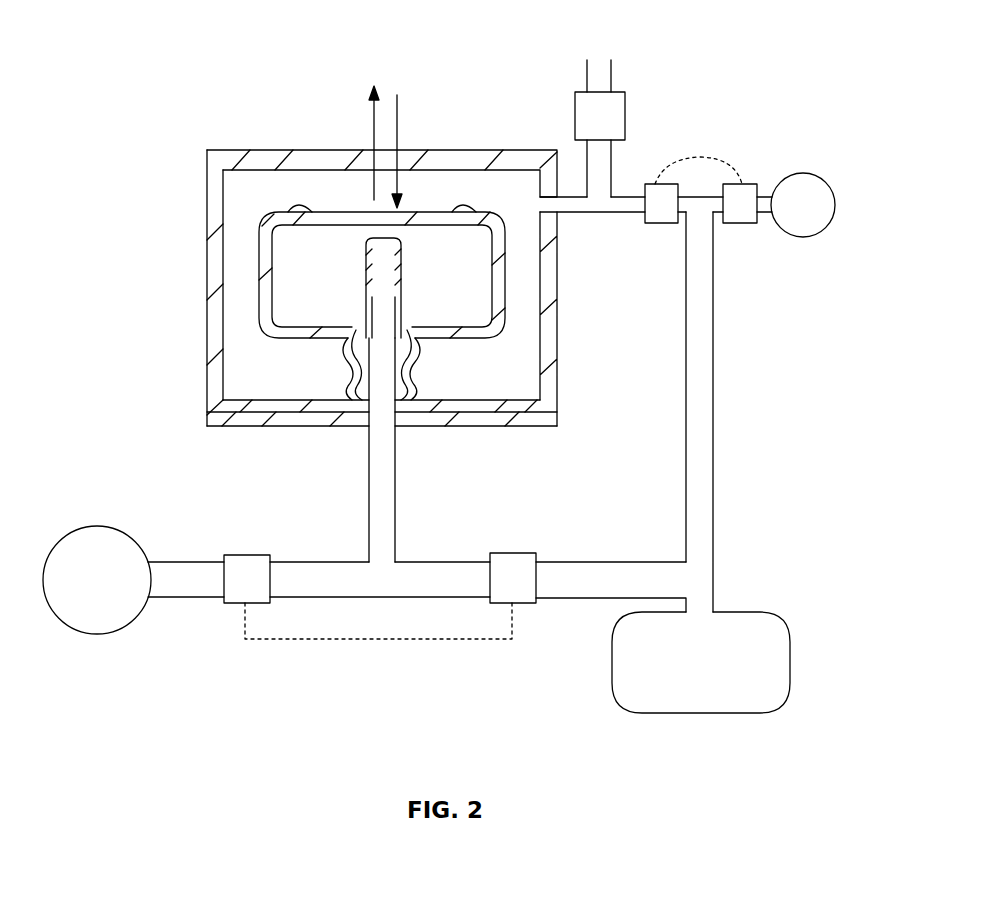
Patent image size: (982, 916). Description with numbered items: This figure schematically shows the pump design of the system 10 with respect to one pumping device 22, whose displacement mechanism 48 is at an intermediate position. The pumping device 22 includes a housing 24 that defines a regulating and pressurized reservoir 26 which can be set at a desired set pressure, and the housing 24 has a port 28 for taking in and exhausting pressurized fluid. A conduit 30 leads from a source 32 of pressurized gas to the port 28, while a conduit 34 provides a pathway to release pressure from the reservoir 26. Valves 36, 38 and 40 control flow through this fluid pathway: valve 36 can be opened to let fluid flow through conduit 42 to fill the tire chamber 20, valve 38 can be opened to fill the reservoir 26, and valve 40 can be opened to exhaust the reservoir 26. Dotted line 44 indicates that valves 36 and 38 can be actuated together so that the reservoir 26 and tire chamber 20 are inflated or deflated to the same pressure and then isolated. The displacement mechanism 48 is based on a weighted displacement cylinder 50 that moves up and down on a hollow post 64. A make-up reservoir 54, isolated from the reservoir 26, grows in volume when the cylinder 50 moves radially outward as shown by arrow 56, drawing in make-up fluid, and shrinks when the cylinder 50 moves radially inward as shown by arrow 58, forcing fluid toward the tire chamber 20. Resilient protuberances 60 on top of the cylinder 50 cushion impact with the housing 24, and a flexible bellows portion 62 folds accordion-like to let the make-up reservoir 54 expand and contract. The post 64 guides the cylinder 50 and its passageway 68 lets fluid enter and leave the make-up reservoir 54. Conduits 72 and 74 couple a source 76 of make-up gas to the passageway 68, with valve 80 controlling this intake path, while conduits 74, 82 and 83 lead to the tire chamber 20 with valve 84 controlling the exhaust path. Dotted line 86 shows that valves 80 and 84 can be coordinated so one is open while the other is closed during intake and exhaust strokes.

The system 10 is at (225, 84).
The tire chamber 20 is at (774, 646).
The pumping device 22 is at (328, 255).
The housing 24 is at (207, 272).
The regulating and pressurized reservoir 26 is at (490, 185).
The port 28 is at (547, 205).
The conduit 30 is at (762, 214).
The source of pressurized fluid 32 is at (803, 223).
The conduit 34 is at (586, 165).
The valve 36 is at (745, 183).
The valve 38 is at (658, 224).
The valve 40 is at (625, 103).
The conduit 42 is at (713, 385).
The dotted line 44 is at (705, 157).
The displacement mechanism 48 is at (358, 289).
The weighted displacement cylinder 50 is at (403, 296).
The make-up reservoir 54 is at (385, 272).
The arrow 56 is at (373, 128).
The arrow 58 is at (398, 112).
The protuberances 60 is at (300, 206).
The flexible portion 62 is at (420, 360).
The post 64 is at (368, 460).
The passageway 68 is at (380, 505).
The conduit 72 is at (182, 597).
The conduit 74 is at (405, 597).
The source of make-up gas 76 is at (100, 634).
The valve 80 is at (240, 605).
The conduit 82 is at (572, 600).
The conduit 83 is at (717, 602).
The valve 84 is at (523, 605).
The dotted line 86 is at (377, 643).